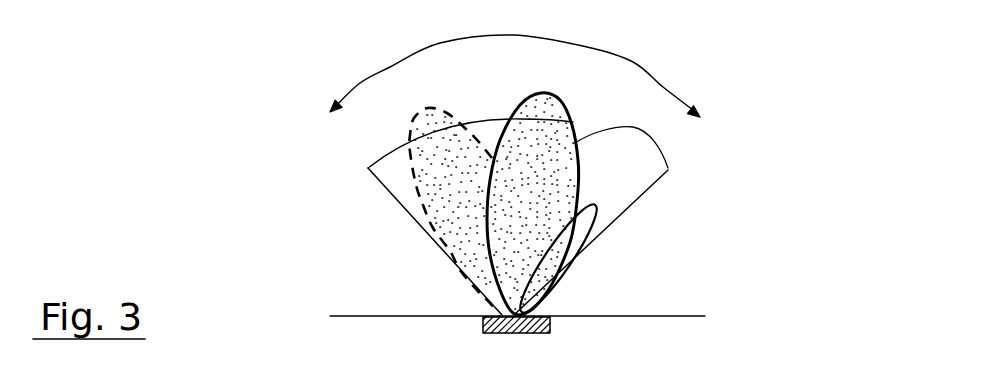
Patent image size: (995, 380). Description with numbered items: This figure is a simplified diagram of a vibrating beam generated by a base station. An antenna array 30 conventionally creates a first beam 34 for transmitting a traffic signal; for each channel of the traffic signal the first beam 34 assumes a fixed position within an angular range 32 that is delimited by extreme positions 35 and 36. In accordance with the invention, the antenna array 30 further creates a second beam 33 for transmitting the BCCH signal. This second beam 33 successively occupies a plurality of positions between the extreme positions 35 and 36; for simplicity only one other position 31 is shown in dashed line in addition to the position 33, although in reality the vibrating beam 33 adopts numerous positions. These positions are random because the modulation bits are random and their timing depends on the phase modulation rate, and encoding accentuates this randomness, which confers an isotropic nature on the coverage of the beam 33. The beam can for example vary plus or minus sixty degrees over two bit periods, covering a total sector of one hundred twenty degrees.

The antenna array 30 is at (480, 323).
The other position 31 is at (413, 118).
The angular range 32 is at (641, 65).
The second beam 33 is at (573, 122).
The first beam 34 is at (560, 250).
The extreme position 35 is at (404, 209).
The extreme position 36 is at (621, 211).